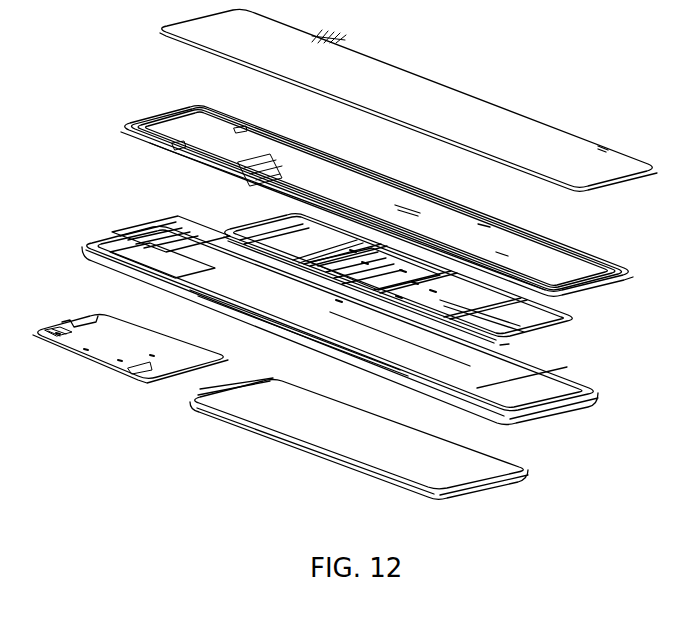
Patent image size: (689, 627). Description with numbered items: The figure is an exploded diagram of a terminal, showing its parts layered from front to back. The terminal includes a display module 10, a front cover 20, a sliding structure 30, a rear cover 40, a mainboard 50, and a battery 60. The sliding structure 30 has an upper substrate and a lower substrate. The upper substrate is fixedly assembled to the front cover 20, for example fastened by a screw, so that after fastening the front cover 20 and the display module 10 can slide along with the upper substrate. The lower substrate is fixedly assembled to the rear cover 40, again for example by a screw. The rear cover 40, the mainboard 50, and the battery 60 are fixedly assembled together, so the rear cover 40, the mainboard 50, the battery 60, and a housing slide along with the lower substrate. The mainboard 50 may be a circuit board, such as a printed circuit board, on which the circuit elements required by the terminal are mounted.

The display module 10 is at (378, 66).
The front cover 20 is at (345, 165).
The sliding structure 30 is at (572, 318).
The rear cover 40 is at (572, 386).
The mainboard 50 is at (158, 341).
The battery 60 is at (360, 418).